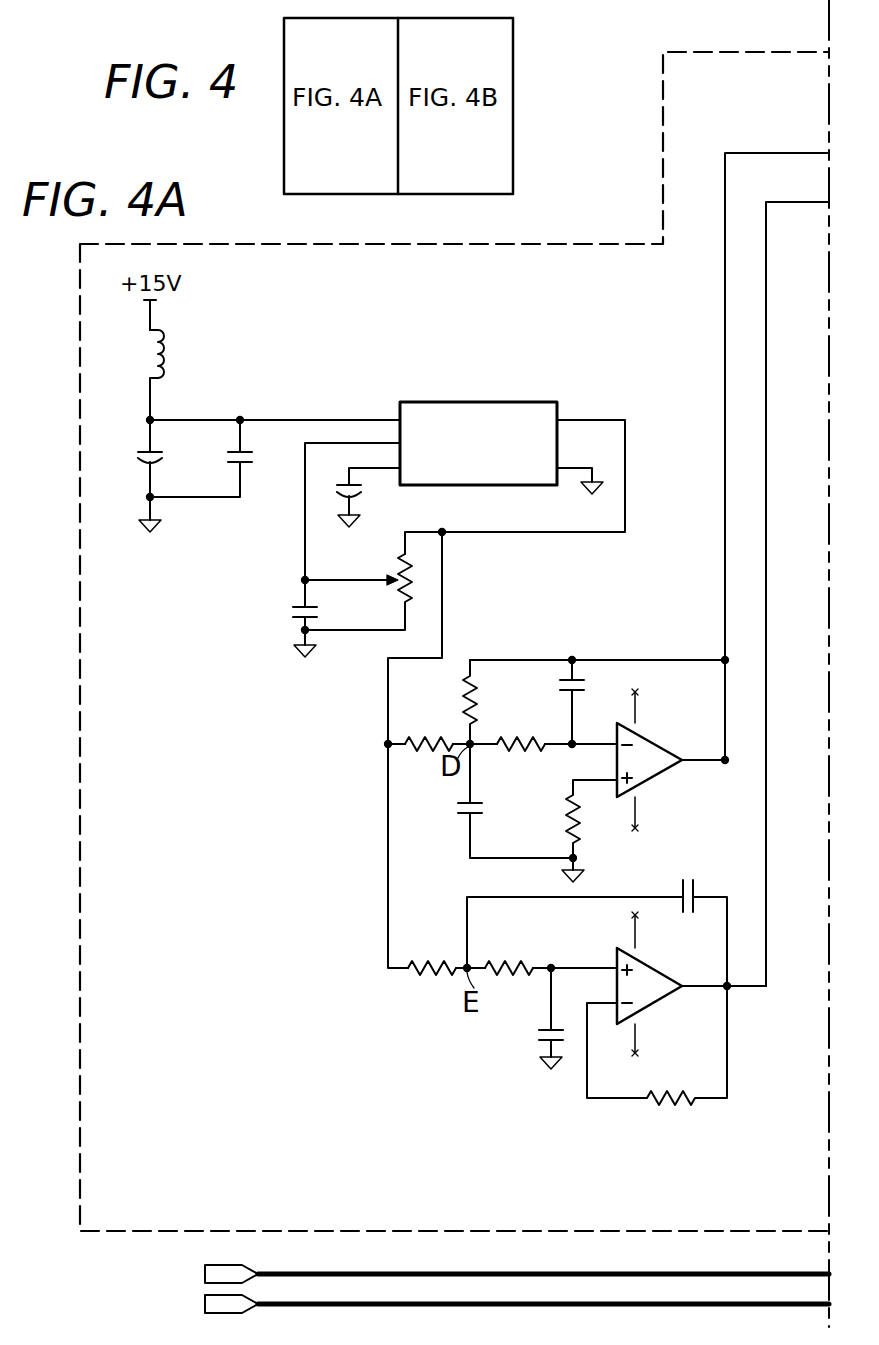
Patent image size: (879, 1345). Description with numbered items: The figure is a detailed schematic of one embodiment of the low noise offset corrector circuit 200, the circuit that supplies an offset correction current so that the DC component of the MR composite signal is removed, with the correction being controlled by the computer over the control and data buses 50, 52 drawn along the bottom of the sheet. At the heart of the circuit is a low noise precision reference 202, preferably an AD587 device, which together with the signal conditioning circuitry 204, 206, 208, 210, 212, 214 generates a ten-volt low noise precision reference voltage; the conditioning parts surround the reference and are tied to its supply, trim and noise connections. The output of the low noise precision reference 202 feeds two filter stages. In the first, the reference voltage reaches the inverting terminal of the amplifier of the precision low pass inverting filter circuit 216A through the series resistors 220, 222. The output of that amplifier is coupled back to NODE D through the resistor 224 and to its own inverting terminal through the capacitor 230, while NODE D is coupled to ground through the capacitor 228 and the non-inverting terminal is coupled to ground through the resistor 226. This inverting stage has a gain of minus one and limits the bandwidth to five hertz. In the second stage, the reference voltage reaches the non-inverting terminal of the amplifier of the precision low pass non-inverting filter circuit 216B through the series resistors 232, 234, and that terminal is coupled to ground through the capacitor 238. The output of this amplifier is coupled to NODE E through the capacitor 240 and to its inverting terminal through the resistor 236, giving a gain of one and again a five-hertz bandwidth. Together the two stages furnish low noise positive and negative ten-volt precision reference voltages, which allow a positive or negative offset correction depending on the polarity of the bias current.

The low noise offset corrector circuit 200 is at (718, 54).
The low noise precision reference 202 is at (488, 404).
The signal conditioning circuitry 204 is at (165, 360).
The signal conditioning circuitry 206 is at (136, 460).
The signal conditioning circuitry 208 is at (258, 458).
The signal conditioning circuitry 210 is at (362, 494).
The signal conditioning circuitry 212 is at (286, 608).
The signal conditioning circuitry 214 is at (398, 562).
The precision low pass inverting filter circuit 216A is at (650, 746).
The precision low pass non-inverting filter circuit 216B is at (650, 976).
The resistor 220 is at (432, 736).
The resistor 222 is at (543, 716).
The resistor 224 is at (478, 696).
The resistor 226 is at (568, 802).
The capacitor 228 is at (455, 812).
The capacitor 230 is at (590, 688).
The resistor 232 is at (427, 958).
The resistor 234 is at (505, 958).
The resistor 236 is at (672, 1090).
The capacitor 238 is at (535, 1030).
The capacitor 240 is at (690, 878).
The control and data bus 50 is at (205, 1272).
The control and data bus 52 is at (205, 1302).